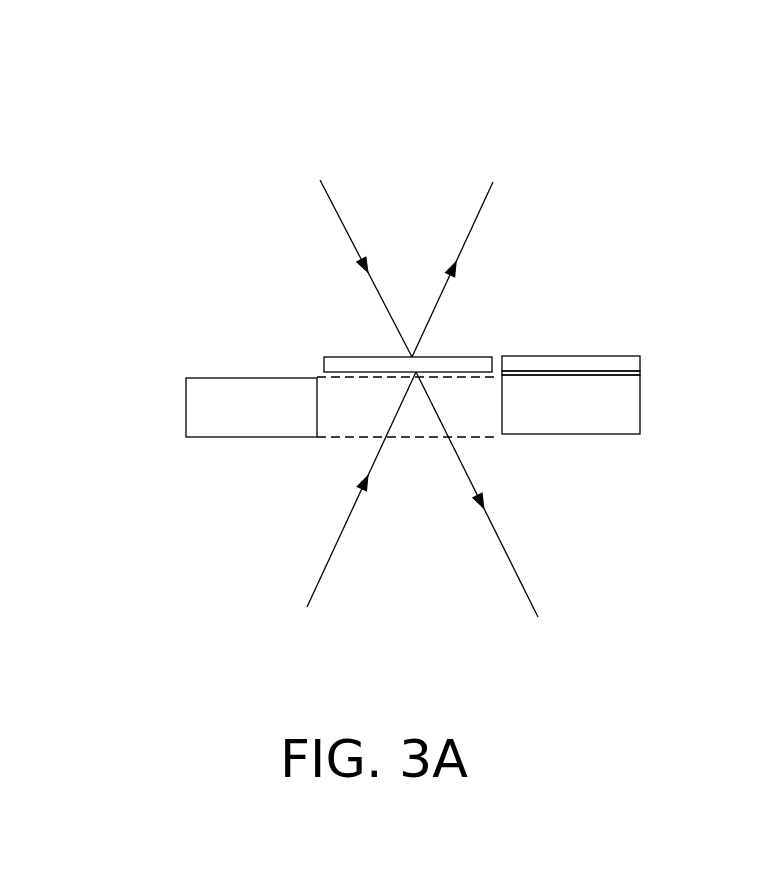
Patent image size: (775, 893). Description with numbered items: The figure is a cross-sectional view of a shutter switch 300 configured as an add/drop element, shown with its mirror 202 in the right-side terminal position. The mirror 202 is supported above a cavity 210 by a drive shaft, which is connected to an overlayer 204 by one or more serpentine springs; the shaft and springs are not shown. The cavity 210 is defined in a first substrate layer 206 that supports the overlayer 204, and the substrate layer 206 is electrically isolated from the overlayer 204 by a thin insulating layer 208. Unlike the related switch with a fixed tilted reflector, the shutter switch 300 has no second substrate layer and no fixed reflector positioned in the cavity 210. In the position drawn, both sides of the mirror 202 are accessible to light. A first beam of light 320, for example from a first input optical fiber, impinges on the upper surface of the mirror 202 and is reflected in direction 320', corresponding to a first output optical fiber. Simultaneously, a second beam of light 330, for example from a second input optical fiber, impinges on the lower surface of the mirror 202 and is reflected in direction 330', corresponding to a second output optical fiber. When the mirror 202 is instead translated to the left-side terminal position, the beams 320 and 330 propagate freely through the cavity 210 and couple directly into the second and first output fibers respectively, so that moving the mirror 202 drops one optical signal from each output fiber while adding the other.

The shutter switch 300 is at (231, 602).
The mirror 202 is at (453, 357).
The overlayer 204 is at (545, 356).
The first substrate layer 206 is at (640, 413).
The thin insulating layer 208 is at (640, 370).
The cavity 210 is at (467, 410).
The first beam of light 320 is at (351, 250).
The direction of reflected first beam 320' is at (469, 250).
The second beam of light 330 is at (349, 507).
The direction of reflected second beam 330' is at (493, 515).